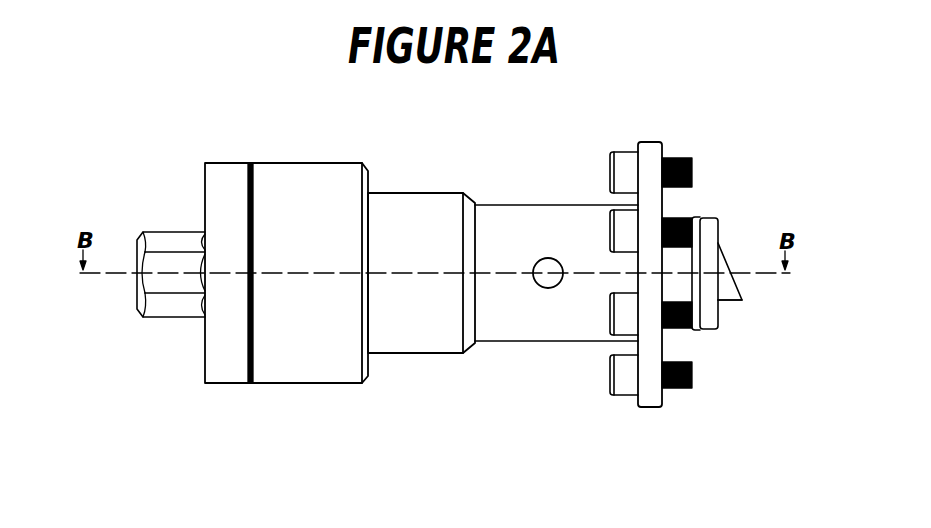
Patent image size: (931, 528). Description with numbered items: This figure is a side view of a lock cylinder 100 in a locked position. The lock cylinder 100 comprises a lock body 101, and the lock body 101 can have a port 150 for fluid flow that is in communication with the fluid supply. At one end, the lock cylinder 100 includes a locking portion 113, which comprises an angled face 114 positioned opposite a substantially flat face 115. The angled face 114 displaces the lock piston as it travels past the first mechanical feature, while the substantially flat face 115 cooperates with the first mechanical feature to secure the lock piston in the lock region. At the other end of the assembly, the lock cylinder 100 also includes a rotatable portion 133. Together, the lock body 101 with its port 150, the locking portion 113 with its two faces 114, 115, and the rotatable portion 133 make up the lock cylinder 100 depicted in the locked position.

The lock cylinder 100 is at (469, 324).
The lock body 101 is at (412, 193).
The locking portion 113 is at (746, 274).
The angled face 114 is at (742, 287).
The substantially flat face 115 is at (729, 300).
The rotatable portion 133 is at (171, 231).
The port 150 is at (550, 258).